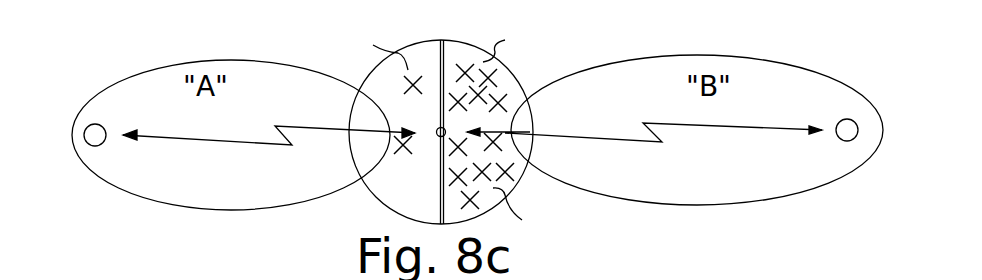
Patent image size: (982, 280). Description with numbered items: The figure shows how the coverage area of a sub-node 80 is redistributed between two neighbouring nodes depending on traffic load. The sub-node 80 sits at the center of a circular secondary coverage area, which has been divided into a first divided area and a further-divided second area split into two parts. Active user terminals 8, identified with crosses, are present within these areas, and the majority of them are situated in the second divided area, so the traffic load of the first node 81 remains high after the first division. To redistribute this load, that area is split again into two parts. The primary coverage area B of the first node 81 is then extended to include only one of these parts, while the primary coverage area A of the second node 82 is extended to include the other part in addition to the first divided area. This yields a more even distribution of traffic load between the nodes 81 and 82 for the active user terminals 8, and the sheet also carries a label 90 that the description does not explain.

The active user terminals 8 is at (516, 86).
The sub-node 80 is at (441, 136).
The first node 81 is at (846, 135).
The second node 82 is at (92, 135).
The page reference label 90 is at (40, 278).